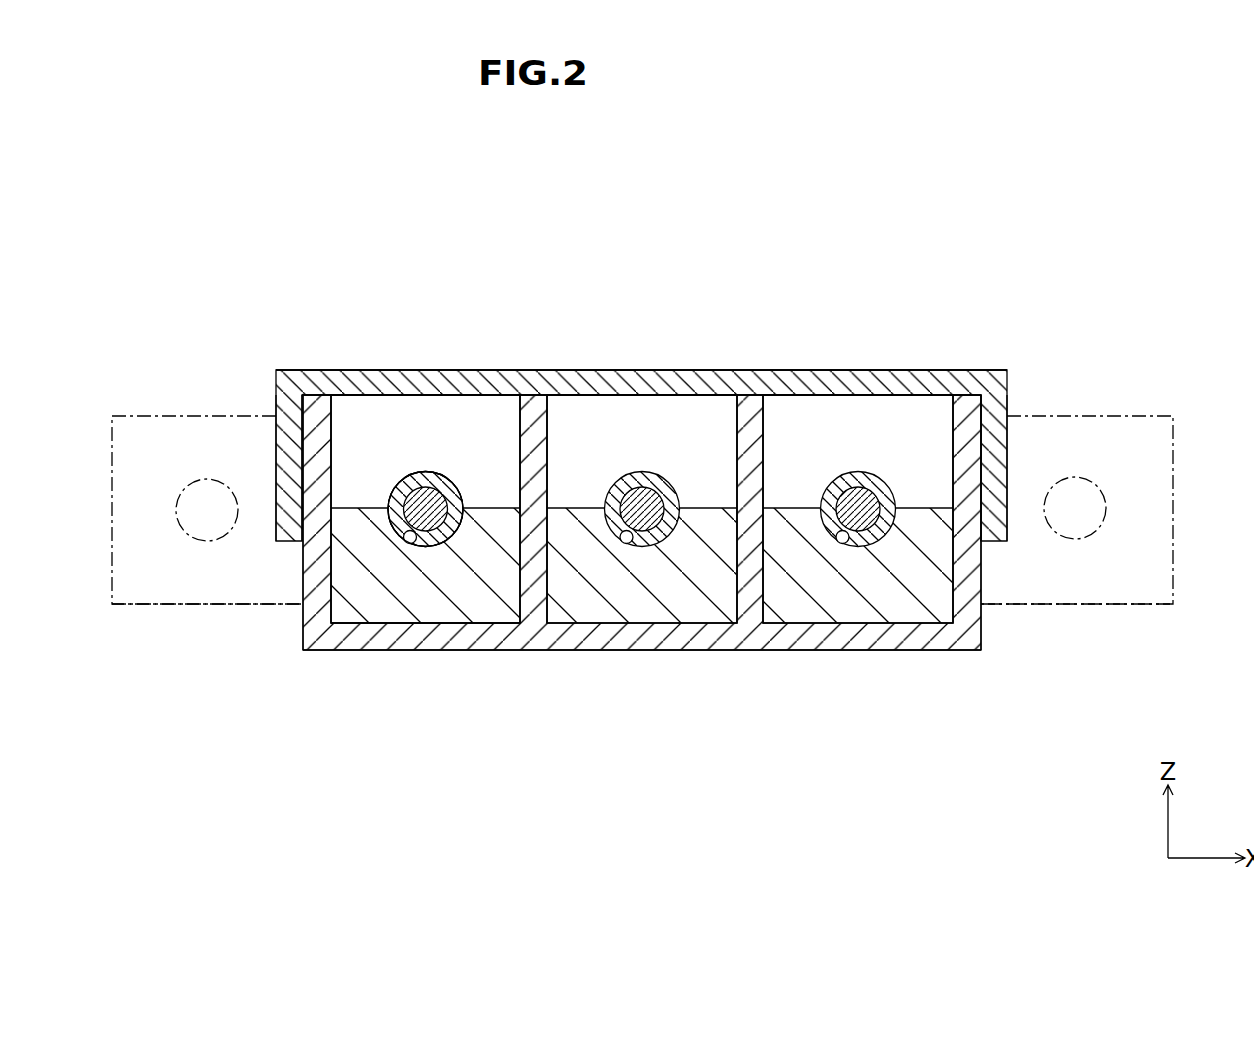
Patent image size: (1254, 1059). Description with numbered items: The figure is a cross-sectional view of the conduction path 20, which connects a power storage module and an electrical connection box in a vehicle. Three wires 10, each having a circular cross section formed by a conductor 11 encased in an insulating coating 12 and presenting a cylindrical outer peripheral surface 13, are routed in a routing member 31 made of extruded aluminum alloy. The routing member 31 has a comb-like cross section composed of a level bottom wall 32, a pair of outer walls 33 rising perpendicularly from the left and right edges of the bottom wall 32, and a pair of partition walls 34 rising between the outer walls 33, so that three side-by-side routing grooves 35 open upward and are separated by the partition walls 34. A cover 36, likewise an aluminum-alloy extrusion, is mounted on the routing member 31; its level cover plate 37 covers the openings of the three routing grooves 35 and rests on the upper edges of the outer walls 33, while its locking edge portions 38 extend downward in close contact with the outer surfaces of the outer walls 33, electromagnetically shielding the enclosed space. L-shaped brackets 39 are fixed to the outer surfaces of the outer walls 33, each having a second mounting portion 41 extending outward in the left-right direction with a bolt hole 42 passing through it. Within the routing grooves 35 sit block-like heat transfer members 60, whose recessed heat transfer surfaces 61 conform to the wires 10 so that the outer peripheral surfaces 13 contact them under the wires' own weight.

The wire 10 is at (436, 706).
The conductor 11 is at (427, 510).
The insulating coating 12 is at (443, 518).
The outer peripheral surface 13 is at (433, 482).
The conduction path 20 is at (928, 305).
The routing member 31 is at (922, 675).
The bottom wall 32 is at (677, 640).
The outer wall 33 is at (310, 568).
The partition wall 34 is at (532, 466).
The routing groove 35 is at (418, 430).
The cover 36 is at (312, 345).
The cover plate 37 is at (578, 370).
The locking edge portion 38 is at (290, 460).
The bracket 39 is at (163, 605).
The second mounting portion 41 is at (146, 442).
The bolt hole 42 is at (200, 493).
The heat transfer member 60 is at (362, 595).
The heat transfer surface 61 is at (414, 544).